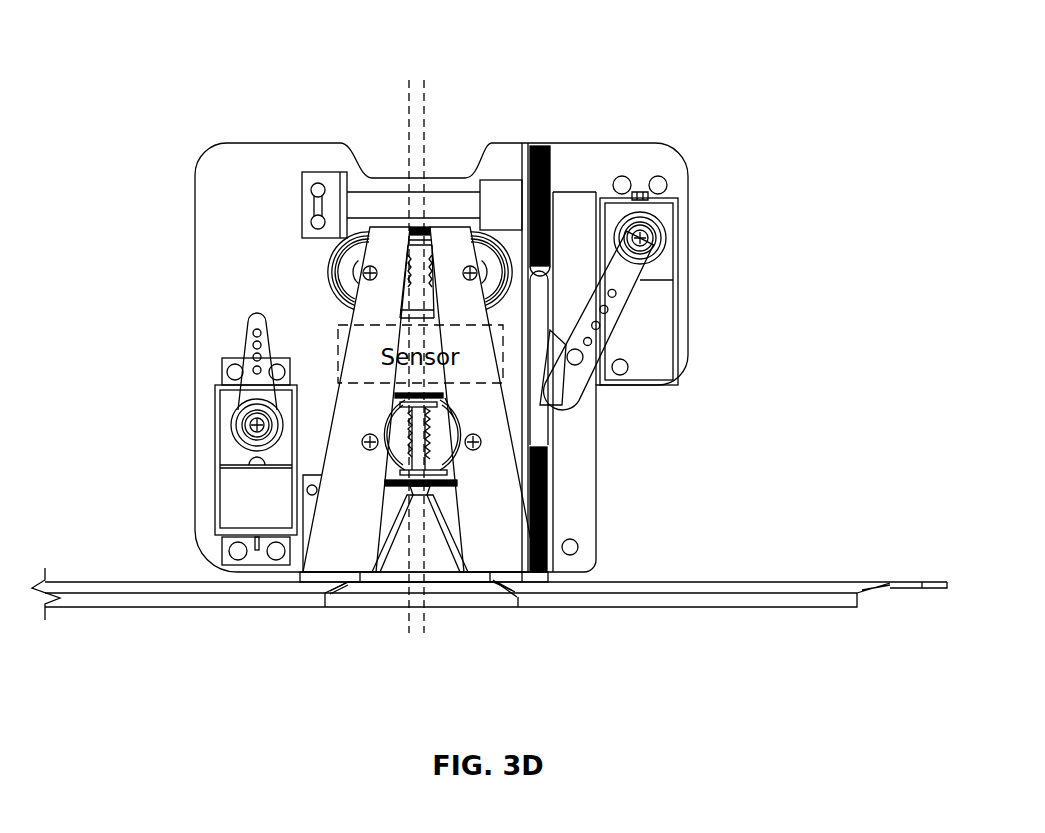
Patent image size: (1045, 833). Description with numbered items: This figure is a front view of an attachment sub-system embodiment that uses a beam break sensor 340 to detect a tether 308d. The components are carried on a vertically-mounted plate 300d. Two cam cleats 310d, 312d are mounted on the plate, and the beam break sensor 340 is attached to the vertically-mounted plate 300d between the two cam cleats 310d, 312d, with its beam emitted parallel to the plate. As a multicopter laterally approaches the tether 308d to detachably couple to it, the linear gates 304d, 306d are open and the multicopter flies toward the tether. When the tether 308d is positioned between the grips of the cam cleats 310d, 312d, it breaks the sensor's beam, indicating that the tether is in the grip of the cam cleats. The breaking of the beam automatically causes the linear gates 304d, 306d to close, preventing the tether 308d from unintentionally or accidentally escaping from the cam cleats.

The vertically-mounted plate 300d is at (634, 143).
The linear gate 304d is at (357, 187).
The linear gate 306d is at (432, 540).
The tether 308d is at (418, 83).
The cam cleat 310d is at (330, 278).
The cam cleat 312d is at (423, 442).
The beam break sensor 340 is at (337, 350).